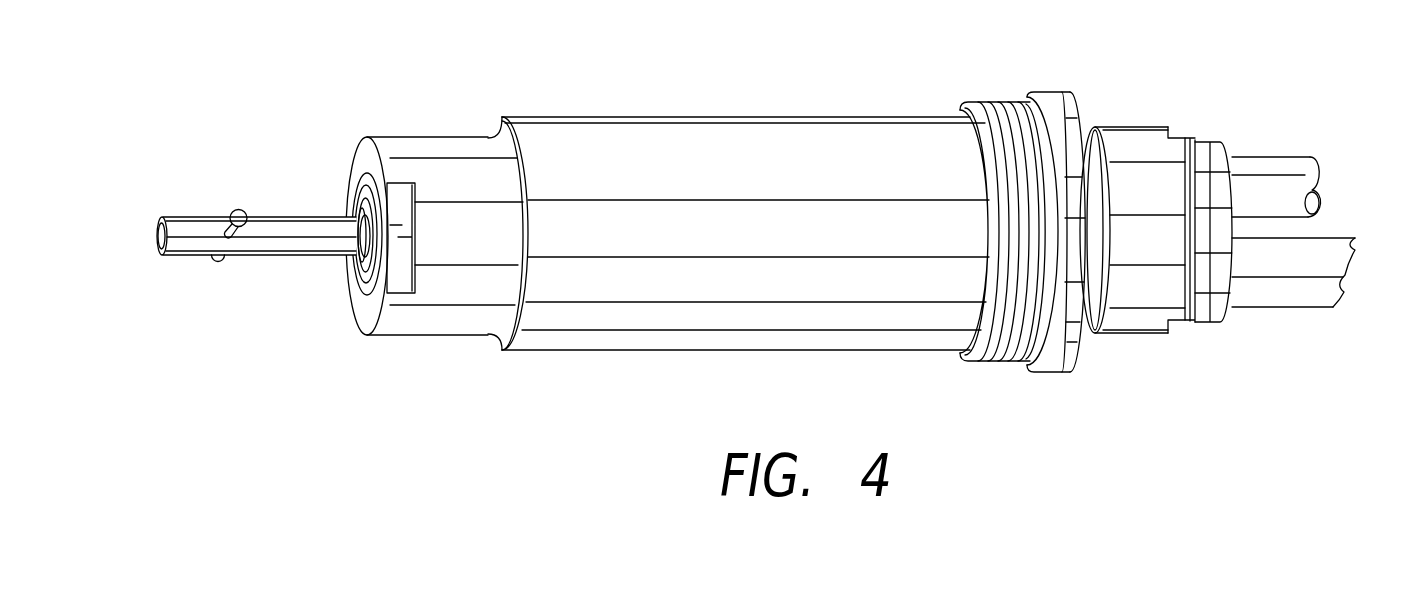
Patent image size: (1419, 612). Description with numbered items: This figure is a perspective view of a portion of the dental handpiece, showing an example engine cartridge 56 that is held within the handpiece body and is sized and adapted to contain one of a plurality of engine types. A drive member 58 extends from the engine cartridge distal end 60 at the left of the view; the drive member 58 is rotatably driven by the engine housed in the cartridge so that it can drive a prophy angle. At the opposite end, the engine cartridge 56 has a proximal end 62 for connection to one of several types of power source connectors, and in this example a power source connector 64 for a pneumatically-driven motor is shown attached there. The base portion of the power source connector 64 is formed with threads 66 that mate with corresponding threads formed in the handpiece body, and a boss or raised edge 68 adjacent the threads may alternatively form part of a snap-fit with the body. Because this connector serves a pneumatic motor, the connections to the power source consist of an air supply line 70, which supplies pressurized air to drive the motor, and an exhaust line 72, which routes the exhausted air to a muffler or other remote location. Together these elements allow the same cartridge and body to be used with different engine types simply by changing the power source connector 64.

The engine cartridge 56 is at (632, 108).
The drive member 58 is at (205, 220).
The engine cartridge distal end 60 is at (350, 116).
The proximal end 62 is at (934, 83).
The power source connector 64 is at (1195, 89).
The threads 66 is at (1007, 362).
The boss or raised edge 68 is at (1047, 373).
The air supply line 70 is at (1275, 157).
The exhaust line 72 is at (1320, 308).